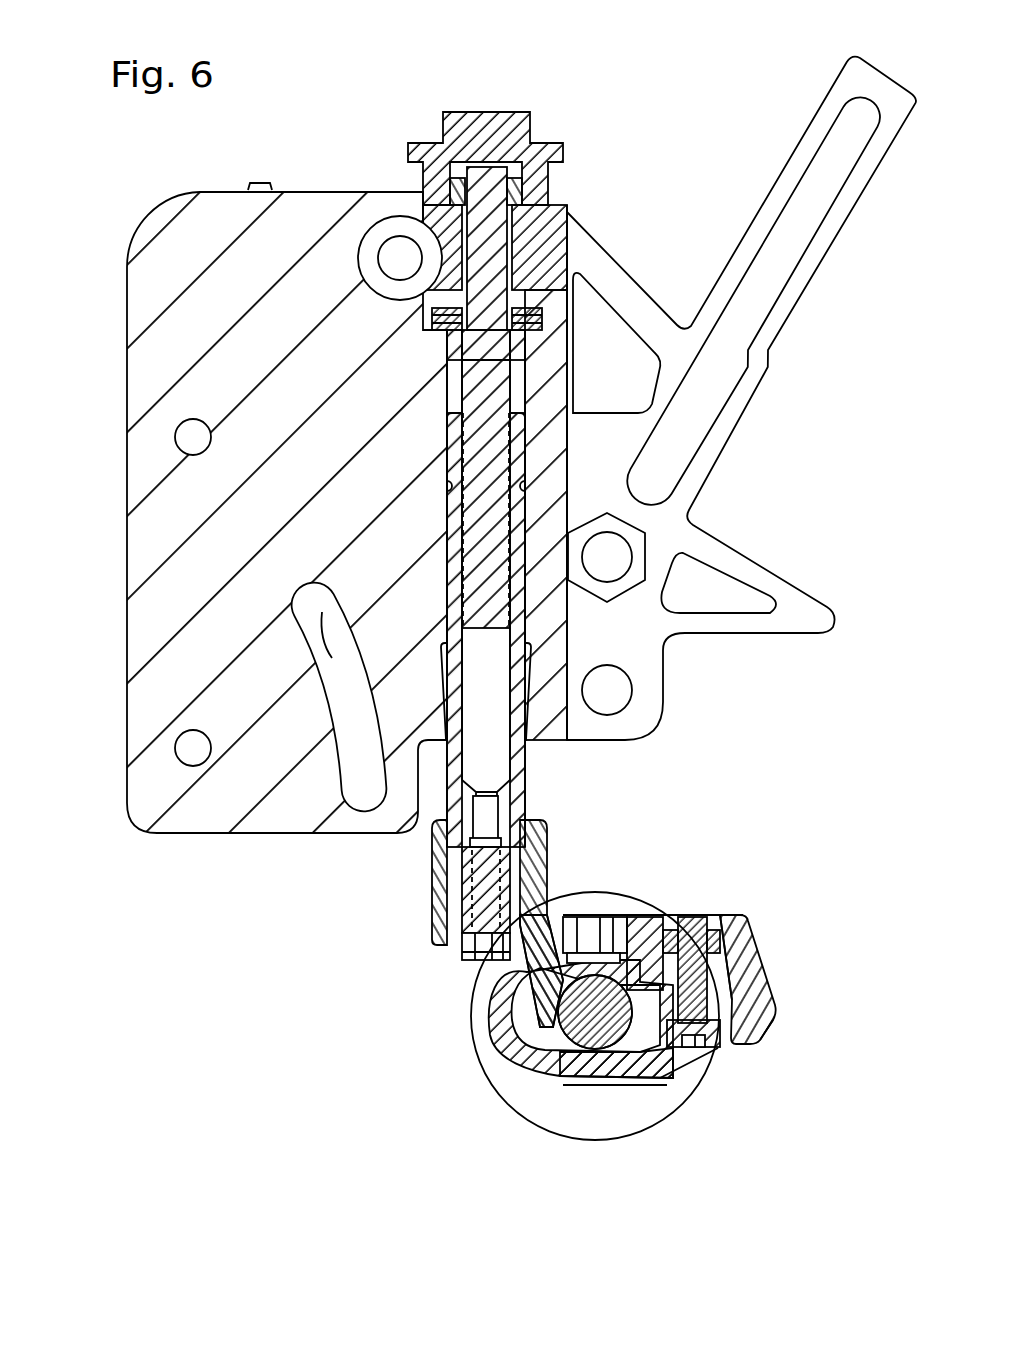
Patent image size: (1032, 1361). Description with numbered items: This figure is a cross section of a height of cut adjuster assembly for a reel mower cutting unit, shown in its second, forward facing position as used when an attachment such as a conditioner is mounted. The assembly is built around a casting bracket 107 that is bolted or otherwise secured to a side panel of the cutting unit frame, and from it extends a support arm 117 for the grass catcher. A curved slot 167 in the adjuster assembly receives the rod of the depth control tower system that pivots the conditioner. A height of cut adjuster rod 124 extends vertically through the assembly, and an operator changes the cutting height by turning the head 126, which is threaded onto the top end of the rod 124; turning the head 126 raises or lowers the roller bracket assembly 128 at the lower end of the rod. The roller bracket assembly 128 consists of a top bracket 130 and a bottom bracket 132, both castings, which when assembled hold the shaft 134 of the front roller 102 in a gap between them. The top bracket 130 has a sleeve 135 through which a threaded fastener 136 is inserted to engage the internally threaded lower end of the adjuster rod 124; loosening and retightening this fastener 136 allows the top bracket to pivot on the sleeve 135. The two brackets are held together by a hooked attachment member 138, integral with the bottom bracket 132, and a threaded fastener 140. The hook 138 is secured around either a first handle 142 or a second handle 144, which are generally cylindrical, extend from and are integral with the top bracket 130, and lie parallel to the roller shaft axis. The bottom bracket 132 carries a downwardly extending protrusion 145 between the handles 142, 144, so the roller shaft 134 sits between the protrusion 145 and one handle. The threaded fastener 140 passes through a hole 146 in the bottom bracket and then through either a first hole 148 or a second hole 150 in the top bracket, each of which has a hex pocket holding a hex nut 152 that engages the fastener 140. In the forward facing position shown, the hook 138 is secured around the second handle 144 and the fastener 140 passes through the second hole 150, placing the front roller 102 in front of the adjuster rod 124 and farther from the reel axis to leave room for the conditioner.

The front roller 102 is at (593, 1138).
The casting bracket 107 is at (172, 328).
The support arm 117 is at (796, 152).
The height of cut adjuster rod 124 is at (525, 778).
The head 126 is at (505, 108).
The roller bracket assembly 128 is at (572, 653).
The top bracket 130 is at (733, 965).
The bottom bracket 132 is at (644, 1077).
The shaft 134 is at (598, 1050).
The sleeve 135 is at (440, 887).
The threaded fastener 136 is at (468, 951).
The hooked attachment member 138 is at (490, 1000).
The threaded fastener 140 is at (712, 1047).
The first handle 142 is at (767, 1030).
The second handle 144 is at (550, 1040).
The downwardly extending protrusion 145 is at (640, 935).
The hole 146 is at (697, 1085).
The first hole 148 is at (700, 930).
The second hole 150 is at (597, 918).
The hex nut 152 is at (713, 918).
The curved slot 167 is at (332, 602).